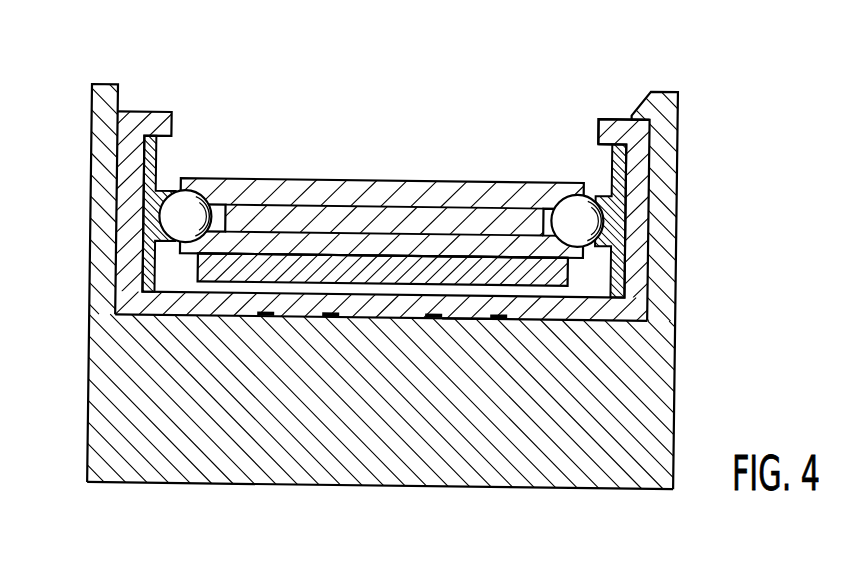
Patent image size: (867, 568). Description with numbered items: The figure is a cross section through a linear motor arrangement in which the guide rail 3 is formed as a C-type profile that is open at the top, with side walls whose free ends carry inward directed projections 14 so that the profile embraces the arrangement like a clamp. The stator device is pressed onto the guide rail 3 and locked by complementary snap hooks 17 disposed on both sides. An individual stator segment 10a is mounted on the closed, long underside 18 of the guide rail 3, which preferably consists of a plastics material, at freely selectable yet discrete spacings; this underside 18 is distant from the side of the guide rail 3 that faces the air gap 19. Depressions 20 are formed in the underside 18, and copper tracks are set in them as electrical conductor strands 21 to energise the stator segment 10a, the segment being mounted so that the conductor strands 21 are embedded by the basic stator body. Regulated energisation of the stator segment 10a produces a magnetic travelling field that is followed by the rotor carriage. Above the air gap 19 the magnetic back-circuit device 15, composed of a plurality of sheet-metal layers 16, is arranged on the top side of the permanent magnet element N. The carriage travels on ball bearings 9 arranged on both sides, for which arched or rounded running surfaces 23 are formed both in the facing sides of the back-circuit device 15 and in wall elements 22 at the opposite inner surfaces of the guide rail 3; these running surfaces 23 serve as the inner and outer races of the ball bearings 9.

The stator segment 10a is at (105, 370).
The snap hooks 17 is at (102, 87).
The underside of the guide rail 18 is at (208, 317).
The guide rail 3 is at (152, 117).
The inward directed projections 14 is at (602, 132).
The wall elements 22 is at (143, 165).
The magnetic back-circuit device 15 is at (290, 160).
The sheet-metal layers 16 is at (360, 242).
The permanent magnet element N is at (400, 258).
The air gap 19 is at (472, 287).
The ball bearings 9 is at (163, 218).
The running surfaces 23 is at (188, 200).
The electrical conductor strands 21 is at (497, 320).
The depressions 20 is at (515, 316).